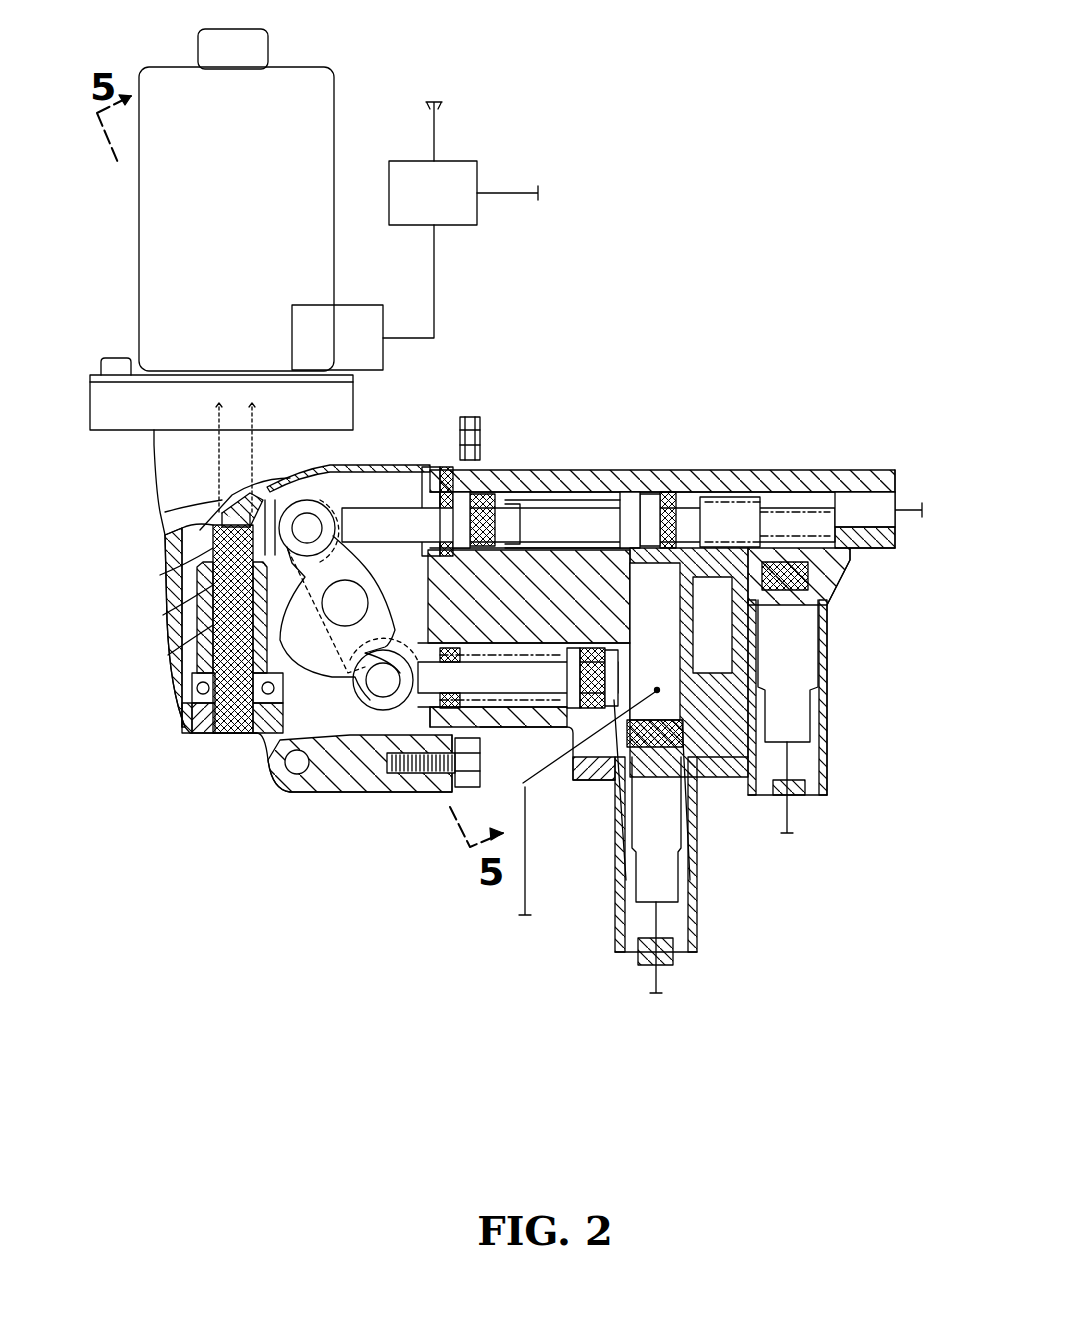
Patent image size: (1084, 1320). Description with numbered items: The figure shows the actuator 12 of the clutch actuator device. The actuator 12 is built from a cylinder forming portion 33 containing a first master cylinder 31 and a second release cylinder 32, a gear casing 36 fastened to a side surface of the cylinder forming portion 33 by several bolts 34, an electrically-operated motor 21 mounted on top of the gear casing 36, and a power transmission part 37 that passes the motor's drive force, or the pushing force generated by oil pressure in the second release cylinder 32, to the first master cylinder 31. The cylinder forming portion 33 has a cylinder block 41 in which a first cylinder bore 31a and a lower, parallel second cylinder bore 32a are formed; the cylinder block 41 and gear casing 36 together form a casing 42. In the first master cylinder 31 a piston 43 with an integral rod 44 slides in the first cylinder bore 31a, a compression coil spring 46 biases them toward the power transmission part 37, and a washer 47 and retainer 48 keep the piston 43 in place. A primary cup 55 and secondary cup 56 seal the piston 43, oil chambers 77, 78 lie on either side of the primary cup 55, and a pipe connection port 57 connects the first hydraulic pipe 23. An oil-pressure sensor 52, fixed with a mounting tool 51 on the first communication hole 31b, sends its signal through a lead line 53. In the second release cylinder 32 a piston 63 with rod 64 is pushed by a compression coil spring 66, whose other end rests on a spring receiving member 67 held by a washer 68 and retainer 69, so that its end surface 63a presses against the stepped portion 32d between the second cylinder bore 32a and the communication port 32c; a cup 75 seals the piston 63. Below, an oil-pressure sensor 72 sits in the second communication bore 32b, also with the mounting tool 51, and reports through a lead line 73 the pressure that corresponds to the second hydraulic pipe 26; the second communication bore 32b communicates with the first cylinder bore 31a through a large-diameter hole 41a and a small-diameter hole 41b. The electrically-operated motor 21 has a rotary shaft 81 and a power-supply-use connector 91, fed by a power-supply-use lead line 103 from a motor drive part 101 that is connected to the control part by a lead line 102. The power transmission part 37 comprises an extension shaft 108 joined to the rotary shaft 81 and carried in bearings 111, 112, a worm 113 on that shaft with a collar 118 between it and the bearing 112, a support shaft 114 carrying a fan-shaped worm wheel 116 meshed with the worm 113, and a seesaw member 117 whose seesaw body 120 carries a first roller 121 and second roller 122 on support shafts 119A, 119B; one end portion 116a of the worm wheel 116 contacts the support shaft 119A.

The actuator 12 is at (728, 159).
The electrically-operated motor 21 is at (327, 77).
The first hydraulic pipe 23 is at (907, 515).
The second hydraulic pipe 26 is at (528, 905).
The first master cylinder 31 is at (790, 485).
The first cylinder bore 31a is at (583, 492).
The first communication hole 31b is at (825, 520).
The second release cylinder 32 is at (513, 710).
The second cylinder bore 32a is at (558, 735).
The second communication bore 32b is at (738, 665).
The communication port 32c is at (690, 860).
The stepped portion 32d is at (640, 770).
The cylinder forming portion 33 is at (862, 470).
The bolts 34 is at (470, 417).
The gear casing 36 is at (152, 472).
The power transmission part 37 is at (315, 718).
The cylinder block 41 is at (850, 575).
The large-diameter hole 41a is at (622, 505).
The small-diameter hole 41b is at (722, 520).
The casing 42 is at (845, 590).
The piston 43 is at (640, 505).
The rod 44 is at (462, 500).
The compression coil spring 46 is at (692, 520).
The washer 47 is at (444, 465).
The retainer 48 is at (432, 465).
The mounting tool 51 is at (824, 750).
The oil-pressure sensor 52 is at (805, 668).
The lead line 53 is at (790, 828).
The primary cup 55 is at (658, 500).
The secondary cup 56 is at (482, 500).
The pipe connection port 57 is at (880, 492).
The piston 63 is at (615, 748).
The end surface 63a is at (690, 775).
The rod 64 is at (523, 723).
The compression coil spring 66 is at (450, 792).
The spring receiving member 67 is at (375, 792).
The washer 68 is at (425, 792).
The retainer 69 is at (402, 792).
The oil-pressure sensor 72 is at (690, 895).
The lead line 73 is at (666, 988).
The cup 75 is at (600, 800).
The oil chamber 77 is at (544, 500).
The oil chamber 78 is at (760, 505).
The rotary shaft 81 is at (205, 545).
The power-supply-use connector 91 is at (358, 305).
The motor drive part 101 is at (467, 161).
The lead line 102 is at (520, 191).
The power-supply-use lead line 103 is at (432, 110).
The extension shaft 108 is at (235, 745).
The bearing 111 is at (349, 453).
The bearing 112 is at (185, 703).
The worm 113 is at (210, 625).
The support shaft 114 is at (310, 772).
The fan-shaped worm wheel 116 is at (265, 778).
The end portion 116a is at (195, 600).
The seesaw member 117 is at (215, 745).
The collar 118 is at (190, 668).
The support shaft 119A is at (200, 565).
The support shaft 119B is at (358, 792).
The seesaw body 120 is at (185, 740).
The first roller 121 is at (215, 500).
The second roller 122 is at (332, 625).